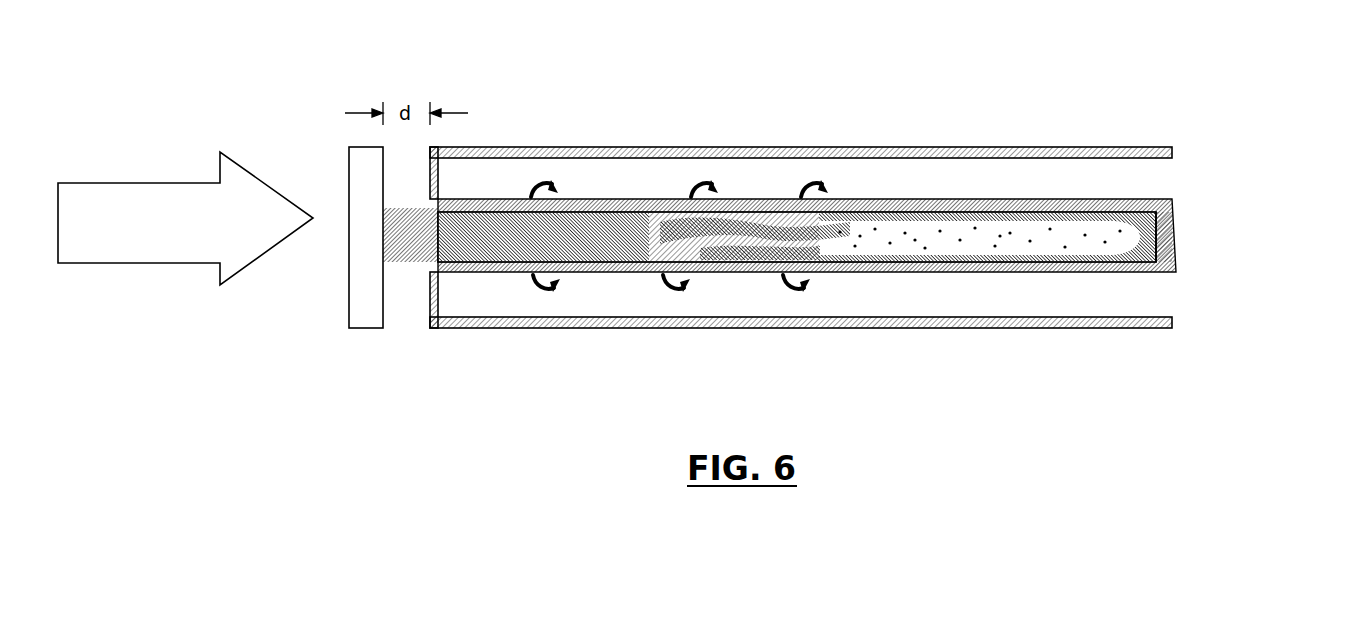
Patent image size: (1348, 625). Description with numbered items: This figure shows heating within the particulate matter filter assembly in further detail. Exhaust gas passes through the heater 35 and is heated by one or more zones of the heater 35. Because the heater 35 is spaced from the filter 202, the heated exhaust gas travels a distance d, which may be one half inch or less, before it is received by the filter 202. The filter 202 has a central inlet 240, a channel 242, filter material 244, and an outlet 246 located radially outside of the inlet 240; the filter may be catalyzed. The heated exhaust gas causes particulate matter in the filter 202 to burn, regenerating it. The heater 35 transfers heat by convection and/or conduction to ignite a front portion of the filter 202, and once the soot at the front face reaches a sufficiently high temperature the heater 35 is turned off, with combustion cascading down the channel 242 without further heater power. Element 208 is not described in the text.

The heater 35 is at (163, 263).
The filter 202 is at (708, 147).
The outlet opening 208 is at (1204, 230).
The central inlet 240 is at (420, 264).
The channel 242 is at (890, 207).
The filter material 244 is at (848, 207).
The outlet 246 is at (1172, 186).